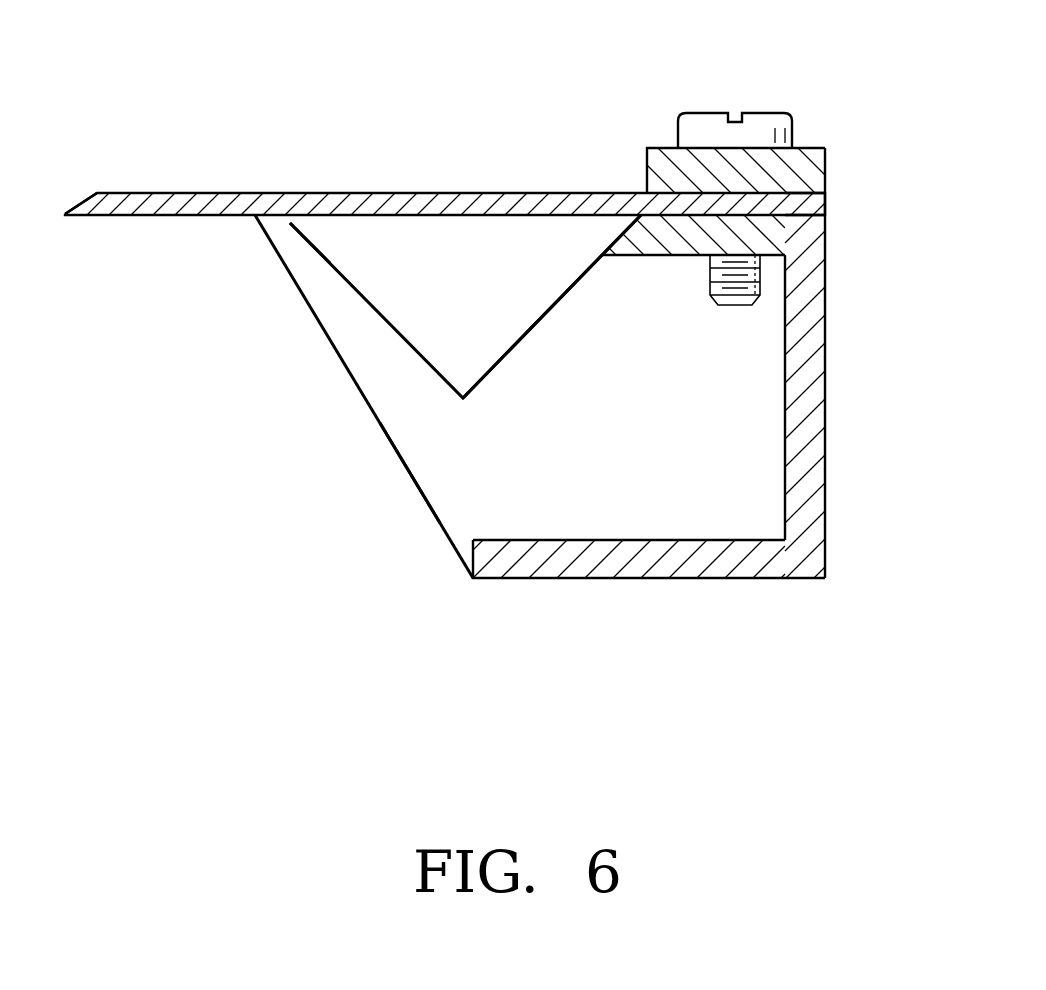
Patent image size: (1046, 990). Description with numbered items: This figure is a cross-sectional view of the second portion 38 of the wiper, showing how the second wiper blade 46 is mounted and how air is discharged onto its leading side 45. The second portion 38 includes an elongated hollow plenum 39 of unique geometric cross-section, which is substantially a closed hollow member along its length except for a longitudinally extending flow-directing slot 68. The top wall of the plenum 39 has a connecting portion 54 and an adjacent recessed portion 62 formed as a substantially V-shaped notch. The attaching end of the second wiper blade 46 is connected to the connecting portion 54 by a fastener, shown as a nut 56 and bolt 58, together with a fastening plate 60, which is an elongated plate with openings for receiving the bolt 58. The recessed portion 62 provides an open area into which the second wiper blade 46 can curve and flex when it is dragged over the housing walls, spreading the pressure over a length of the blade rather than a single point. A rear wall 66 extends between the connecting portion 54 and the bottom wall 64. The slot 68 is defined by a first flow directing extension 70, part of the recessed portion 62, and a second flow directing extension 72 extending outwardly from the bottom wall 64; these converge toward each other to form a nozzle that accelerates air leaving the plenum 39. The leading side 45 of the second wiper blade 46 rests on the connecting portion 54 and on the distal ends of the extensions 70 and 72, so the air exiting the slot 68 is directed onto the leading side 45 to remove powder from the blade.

The second portion 38 is at (703, 367).
The plenum 39 is at (412, 502).
The leading side 45 is at (176, 217).
The second wiper blade 46 is at (390, 193).
The connecting portion 54 is at (803, 202).
The nut 56 is at (660, 240).
The bolt 58 is at (718, 113).
The fastening plate 60 is at (647, 175).
The recessed portion 62 is at (488, 336).
The bottom wall 64 is at (667, 555).
The rear wall 66 is at (826, 393).
The flow-directing slot 68 is at (292, 246).
The first flow directing extension 70 is at (392, 323).
The second flow directing extension 72 is at (367, 405).